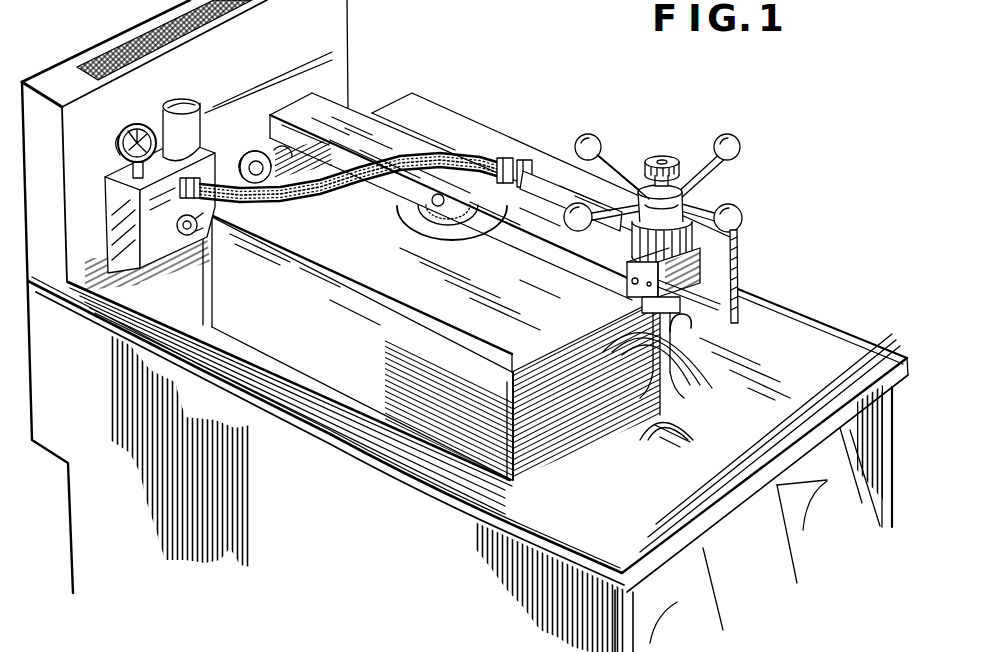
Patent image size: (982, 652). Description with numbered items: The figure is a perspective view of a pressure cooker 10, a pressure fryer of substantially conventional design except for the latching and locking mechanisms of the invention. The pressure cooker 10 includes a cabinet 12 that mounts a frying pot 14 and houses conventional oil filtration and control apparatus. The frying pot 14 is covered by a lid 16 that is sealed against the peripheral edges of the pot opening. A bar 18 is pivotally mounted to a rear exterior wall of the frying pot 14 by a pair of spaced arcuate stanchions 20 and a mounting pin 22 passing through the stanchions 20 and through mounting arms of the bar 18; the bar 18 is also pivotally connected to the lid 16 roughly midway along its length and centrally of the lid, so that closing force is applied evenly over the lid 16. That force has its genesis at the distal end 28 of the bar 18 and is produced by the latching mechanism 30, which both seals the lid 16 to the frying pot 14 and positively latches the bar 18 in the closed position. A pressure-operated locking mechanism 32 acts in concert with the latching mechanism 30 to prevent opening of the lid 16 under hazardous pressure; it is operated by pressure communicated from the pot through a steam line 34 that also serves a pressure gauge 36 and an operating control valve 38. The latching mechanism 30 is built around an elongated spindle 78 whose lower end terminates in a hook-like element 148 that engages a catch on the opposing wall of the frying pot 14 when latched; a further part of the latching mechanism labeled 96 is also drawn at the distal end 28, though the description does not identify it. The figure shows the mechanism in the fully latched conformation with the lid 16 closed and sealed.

The pressure cooker 10 is at (790, 292).
The cabinet 12 is at (341, 536).
The frying pot 14 is at (578, 405).
The lid 16 is at (410, 293).
The bar 18 is at (347, 123).
The stanchions 20 is at (247, 158).
The mounting pin 22 is at (249, 182).
The distal end 28 is at (610, 272).
The latching mechanism 30 is at (686, 153).
The pressure-operated locking mechanism 32 is at (555, 170).
The steam line 34 is at (356, 186).
The pressure gauge 36 is at (123, 120).
The operating control valve 38 is at (185, 101).
The spindle 78 is at (690, 348).
The handle arm 96 is at (705, 190).
The hook-like element 148 is at (655, 372).